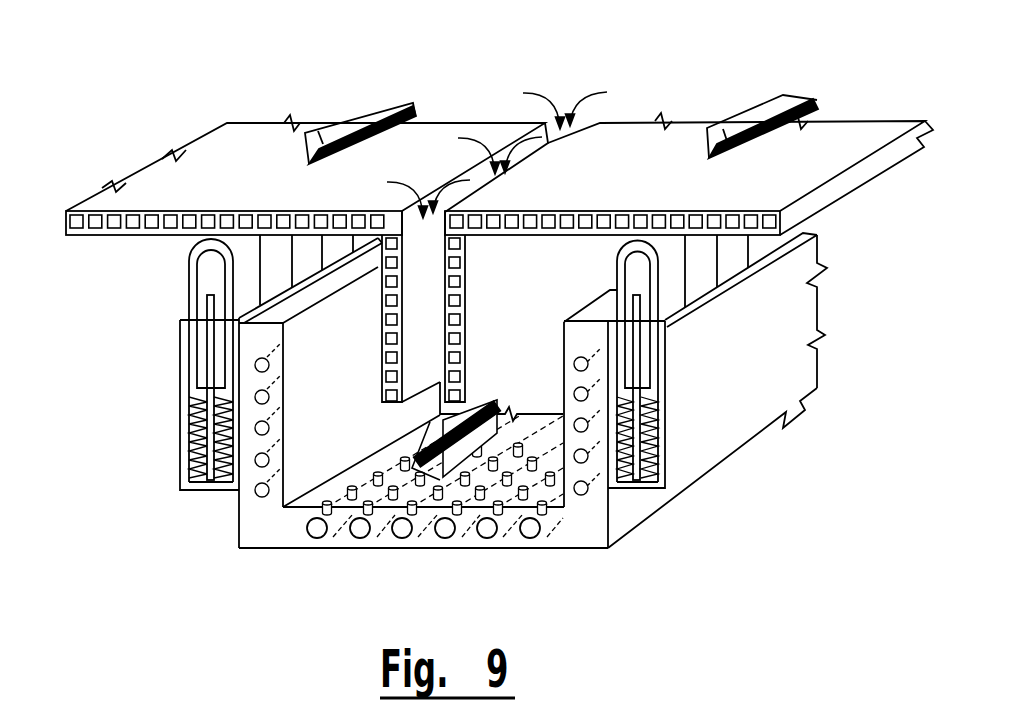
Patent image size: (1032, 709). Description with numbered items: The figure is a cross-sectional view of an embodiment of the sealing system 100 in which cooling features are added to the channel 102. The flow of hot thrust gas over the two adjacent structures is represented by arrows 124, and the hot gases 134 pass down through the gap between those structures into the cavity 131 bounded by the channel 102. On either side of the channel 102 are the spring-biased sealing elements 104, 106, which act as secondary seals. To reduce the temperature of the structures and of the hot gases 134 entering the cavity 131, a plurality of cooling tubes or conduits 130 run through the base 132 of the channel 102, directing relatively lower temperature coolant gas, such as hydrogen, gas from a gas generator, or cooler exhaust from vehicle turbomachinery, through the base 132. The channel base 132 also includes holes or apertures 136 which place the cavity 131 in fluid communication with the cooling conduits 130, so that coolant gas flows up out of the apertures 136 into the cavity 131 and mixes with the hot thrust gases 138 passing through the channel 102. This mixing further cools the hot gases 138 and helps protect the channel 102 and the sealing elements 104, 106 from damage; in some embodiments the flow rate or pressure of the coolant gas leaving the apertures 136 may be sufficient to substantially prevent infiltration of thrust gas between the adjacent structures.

The sealing system 100 is at (262, 562).
The channel 102 is at (299, 514).
The sealing element 104 is at (167, 450).
The sealing element 106 is at (672, 370).
The arrows representing flow of hot thrust gas 124 is at (387, 103).
The cooling conduits 130 is at (543, 537).
The cavity 131 is at (298, 483).
The base 132 is at (384, 540).
The hot gases 134 is at (590, 116).
The apertures 136 is at (377, 478).
The hot thrust gases 138 is at (418, 434).